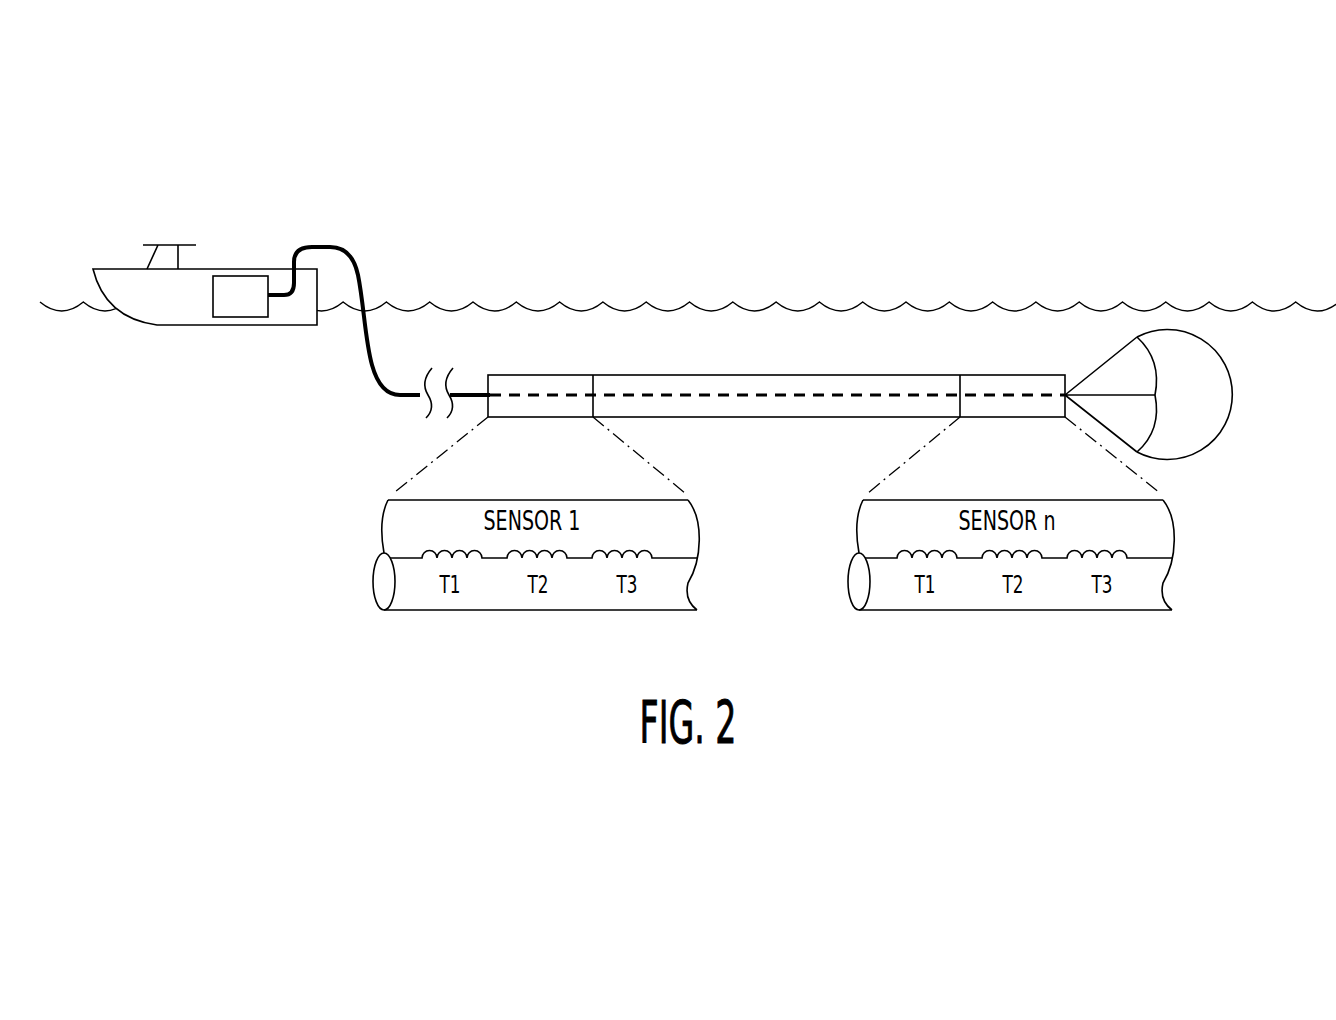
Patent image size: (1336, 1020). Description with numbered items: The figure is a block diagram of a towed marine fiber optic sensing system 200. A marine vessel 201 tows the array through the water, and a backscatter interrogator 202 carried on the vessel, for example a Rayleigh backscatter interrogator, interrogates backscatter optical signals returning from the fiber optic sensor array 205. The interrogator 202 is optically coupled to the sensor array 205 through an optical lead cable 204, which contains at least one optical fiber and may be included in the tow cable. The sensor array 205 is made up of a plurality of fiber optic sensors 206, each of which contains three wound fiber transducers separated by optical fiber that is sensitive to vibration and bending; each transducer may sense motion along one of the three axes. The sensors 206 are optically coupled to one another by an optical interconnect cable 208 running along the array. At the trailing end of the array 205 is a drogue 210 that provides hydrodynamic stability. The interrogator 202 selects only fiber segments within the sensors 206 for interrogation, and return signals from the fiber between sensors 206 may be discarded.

The fiber optic sensing system 200 is at (1165, 227).
The marine vessel 201 is at (242, 260).
The backscatter interrogator 202 is at (255, 308).
The optical lead cable 204 is at (362, 291).
The fiber optic sensor array 205 is at (792, 375).
The fiber optic sensor 206 is at (522, 375).
The optical interconnect cable 208 is at (725, 398).
The drogue 210 is at (1220, 427).